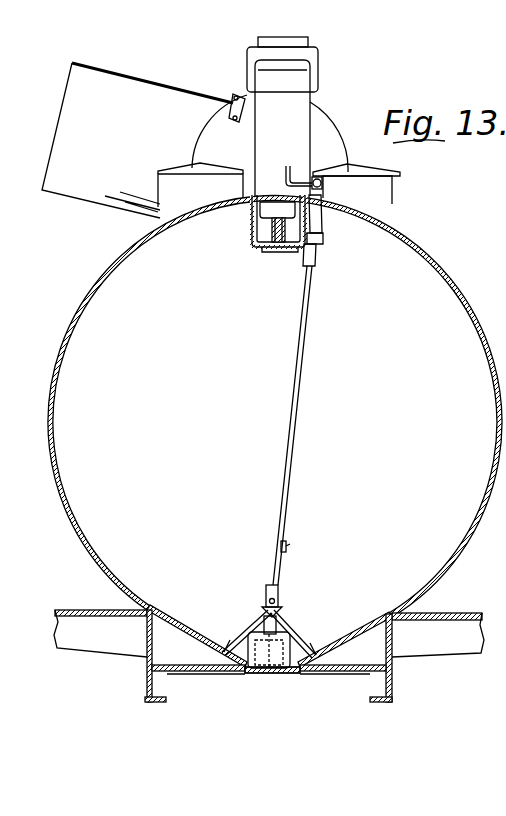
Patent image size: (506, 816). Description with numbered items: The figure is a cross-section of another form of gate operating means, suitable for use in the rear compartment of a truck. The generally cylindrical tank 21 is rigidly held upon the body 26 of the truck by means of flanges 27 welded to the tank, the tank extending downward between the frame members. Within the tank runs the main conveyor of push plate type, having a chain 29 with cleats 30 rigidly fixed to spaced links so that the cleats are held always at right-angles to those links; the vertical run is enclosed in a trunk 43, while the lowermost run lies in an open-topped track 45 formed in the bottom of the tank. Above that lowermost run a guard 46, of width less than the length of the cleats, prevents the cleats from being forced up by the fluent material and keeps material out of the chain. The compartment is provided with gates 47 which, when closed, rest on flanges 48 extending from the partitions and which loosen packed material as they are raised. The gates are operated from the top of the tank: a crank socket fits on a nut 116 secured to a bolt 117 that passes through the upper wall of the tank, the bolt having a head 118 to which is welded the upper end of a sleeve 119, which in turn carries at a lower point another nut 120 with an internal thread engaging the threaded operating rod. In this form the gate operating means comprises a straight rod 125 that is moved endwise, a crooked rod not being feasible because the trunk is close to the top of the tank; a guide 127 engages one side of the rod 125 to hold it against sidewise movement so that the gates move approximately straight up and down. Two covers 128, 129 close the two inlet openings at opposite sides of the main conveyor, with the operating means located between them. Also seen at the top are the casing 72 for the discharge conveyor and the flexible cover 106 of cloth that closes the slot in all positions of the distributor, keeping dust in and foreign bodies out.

The tank 21 is at (476, 318).
The body 26 is at (62, 610).
The flanges 27 is at (130, 594).
The chain 29 is at (285, 249).
The cleats 30 is at (252, 213).
The trunk 43 is at (300, 122).
The track 45 is at (266, 672).
The guard 46 is at (278, 612).
The gates 47 is at (258, 620).
The flanges 48 is at (240, 640).
The casing 72 is at (50, 131).
The flexible cover 106 is at (133, 80).
The nut 116 is at (323, 184).
The bolt 117 is at (308, 185).
The head 118 is at (322, 208).
The sleeve 119 is at (323, 237).
The nut 120 is at (316, 250).
The rod 125 is at (292, 462).
The guide 127 is at (291, 544).
The cover 128 is at (197, 171).
The cover 129 is at (382, 173).